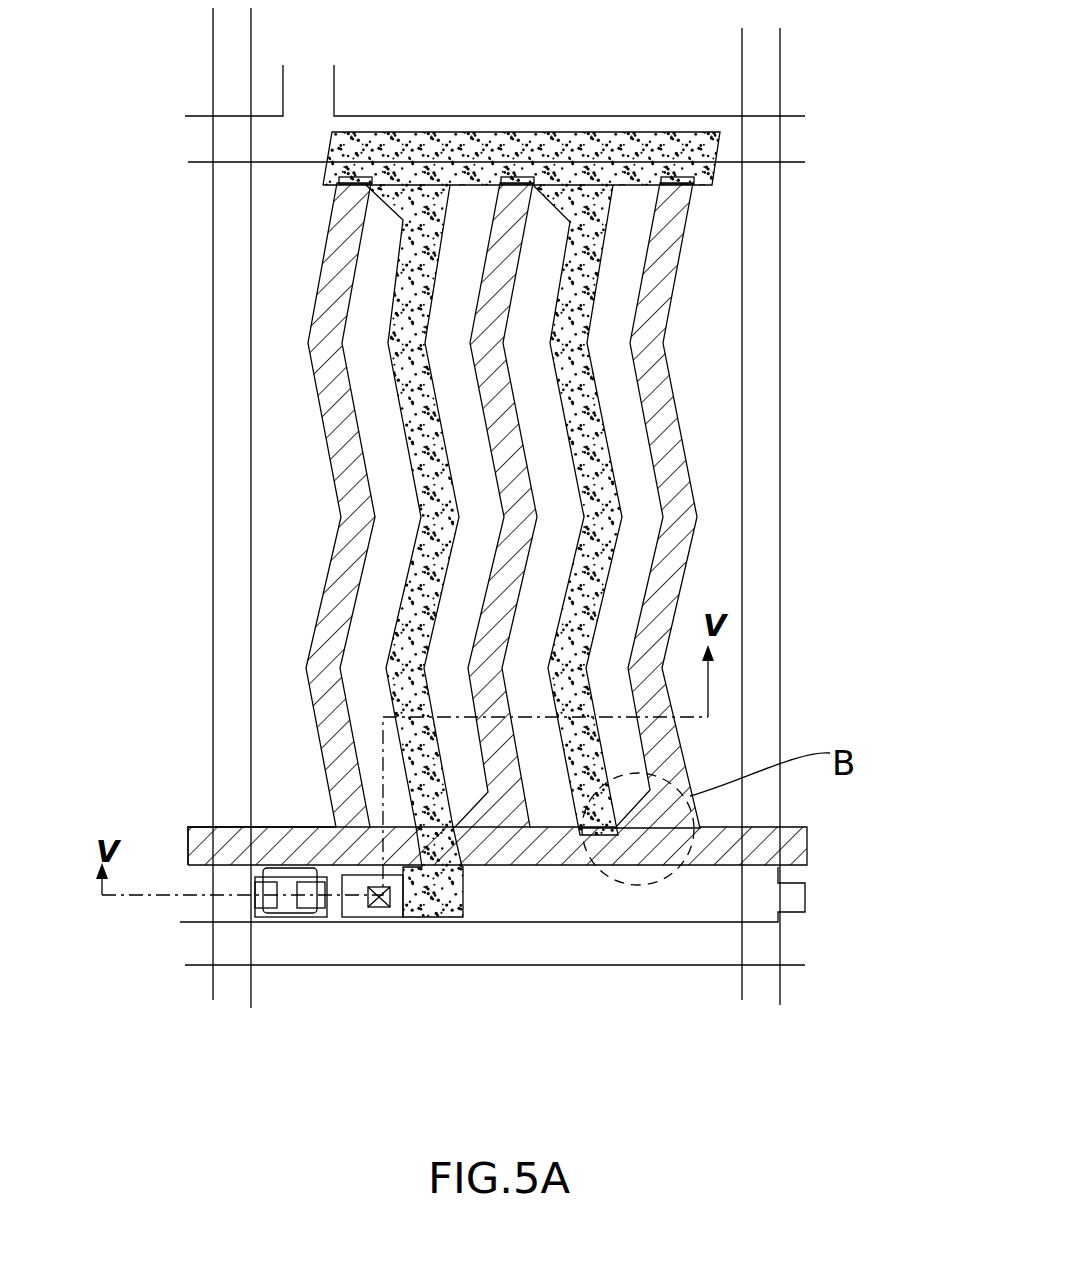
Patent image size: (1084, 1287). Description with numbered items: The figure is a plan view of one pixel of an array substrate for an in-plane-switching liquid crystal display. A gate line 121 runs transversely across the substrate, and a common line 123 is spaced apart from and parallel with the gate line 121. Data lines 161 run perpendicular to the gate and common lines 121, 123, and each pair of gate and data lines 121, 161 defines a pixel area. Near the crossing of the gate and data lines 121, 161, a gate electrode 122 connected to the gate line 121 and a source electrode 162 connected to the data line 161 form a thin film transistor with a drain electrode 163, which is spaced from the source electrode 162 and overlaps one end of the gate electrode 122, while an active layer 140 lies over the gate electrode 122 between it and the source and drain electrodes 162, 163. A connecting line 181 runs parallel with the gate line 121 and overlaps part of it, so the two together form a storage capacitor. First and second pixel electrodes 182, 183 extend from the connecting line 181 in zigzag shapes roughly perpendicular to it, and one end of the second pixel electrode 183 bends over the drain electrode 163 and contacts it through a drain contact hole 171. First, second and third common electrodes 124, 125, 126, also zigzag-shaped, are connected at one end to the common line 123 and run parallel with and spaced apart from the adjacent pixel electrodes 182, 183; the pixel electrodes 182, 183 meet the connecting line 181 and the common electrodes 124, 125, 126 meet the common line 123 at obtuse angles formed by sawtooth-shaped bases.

The gate line 121 is at (478, 112).
The gate electrode 122 is at (290, 864).
The common line 123 is at (650, 866).
The first common electrode 124 is at (660, 355).
The second common electrode 125 is at (490, 628).
The third common electrode 126 is at (332, 407).
The active layer 140 is at (303, 918).
The data line 161 is at (228, 280).
The source electrode 162 is at (275, 918).
The drain electrode 163 is at (405, 921).
The drain contact hole 171 is at (380, 917).
The connecting line 181 is at (655, 133).
The first pixel electrode 182 is at (615, 462).
The second pixel electrode 183 is at (425, 520).